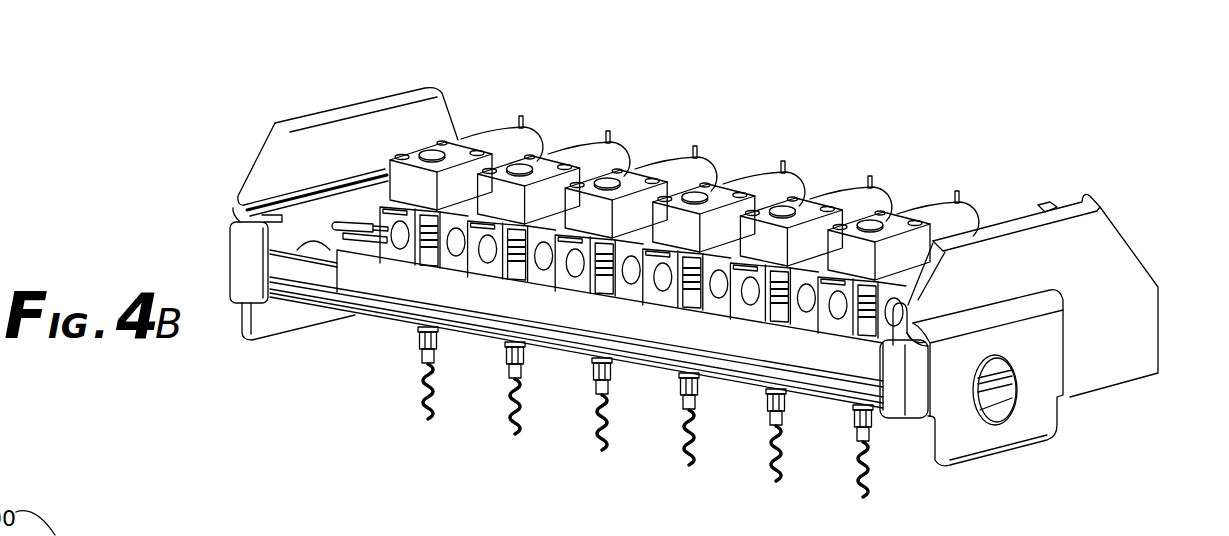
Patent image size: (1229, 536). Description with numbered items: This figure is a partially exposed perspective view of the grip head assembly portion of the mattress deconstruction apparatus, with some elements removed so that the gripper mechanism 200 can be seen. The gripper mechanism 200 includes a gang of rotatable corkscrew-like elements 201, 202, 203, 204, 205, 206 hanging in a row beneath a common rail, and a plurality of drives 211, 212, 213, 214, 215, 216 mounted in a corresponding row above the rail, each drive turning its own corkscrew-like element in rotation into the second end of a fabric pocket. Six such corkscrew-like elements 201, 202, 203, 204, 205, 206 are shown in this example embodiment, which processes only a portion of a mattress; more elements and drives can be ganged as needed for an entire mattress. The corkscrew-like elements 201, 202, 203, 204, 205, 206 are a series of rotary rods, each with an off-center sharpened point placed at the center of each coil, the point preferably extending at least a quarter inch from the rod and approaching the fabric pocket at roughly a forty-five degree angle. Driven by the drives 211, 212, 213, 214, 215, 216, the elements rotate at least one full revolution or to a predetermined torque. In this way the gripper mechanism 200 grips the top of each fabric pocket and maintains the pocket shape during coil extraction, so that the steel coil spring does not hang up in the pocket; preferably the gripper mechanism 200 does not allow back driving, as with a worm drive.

The gripper mechanism 200 is at (1099, 120).
The rotatable corkscrew-like element 201 is at (420, 385).
The rotatable corkscrew-like element 202 is at (508, 404).
The rotatable corkscrew-like element 203 is at (598, 412).
The rotatable corkscrew-like element 204 is at (685, 428).
The rotatable corkscrew-like element 205 is at (773, 450).
The rotatable corkscrew-like element 206 is at (878, 488).
The drive 211 is at (545, 123).
The drive 212 is at (636, 143).
The drive 213 is at (720, 160).
The drive 214 is at (810, 172).
The drive 215 is at (897, 187).
The drive 216 is at (983, 203).